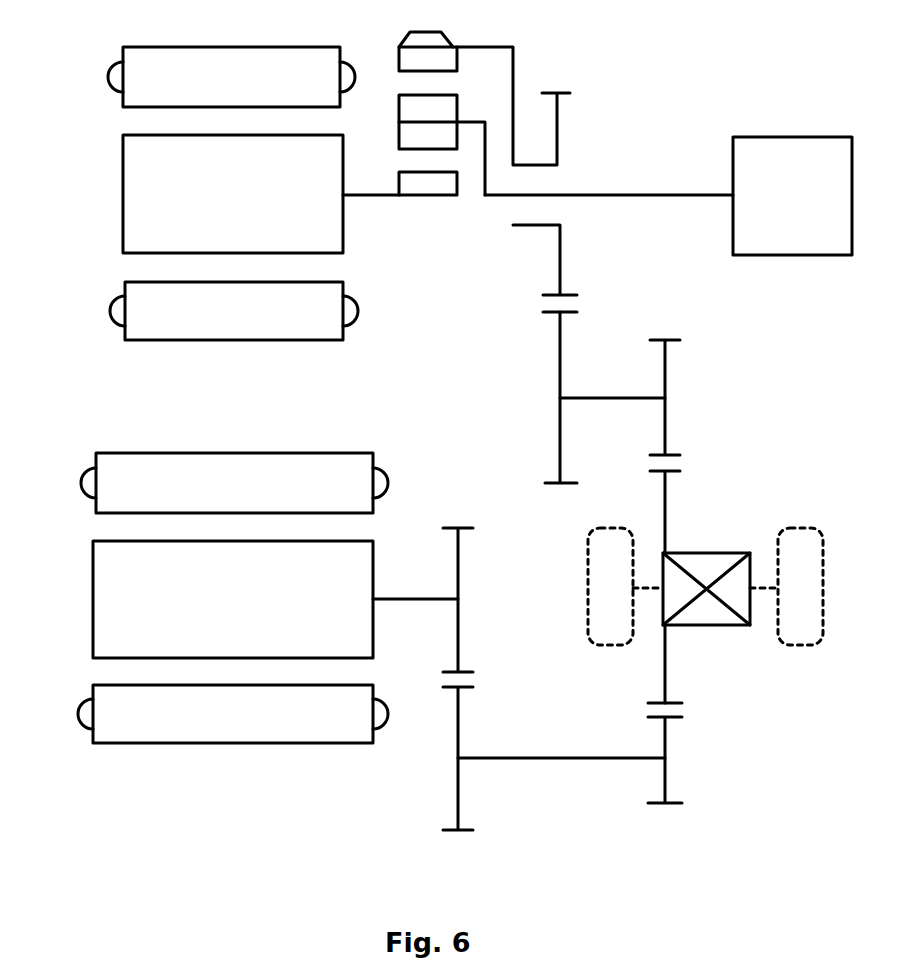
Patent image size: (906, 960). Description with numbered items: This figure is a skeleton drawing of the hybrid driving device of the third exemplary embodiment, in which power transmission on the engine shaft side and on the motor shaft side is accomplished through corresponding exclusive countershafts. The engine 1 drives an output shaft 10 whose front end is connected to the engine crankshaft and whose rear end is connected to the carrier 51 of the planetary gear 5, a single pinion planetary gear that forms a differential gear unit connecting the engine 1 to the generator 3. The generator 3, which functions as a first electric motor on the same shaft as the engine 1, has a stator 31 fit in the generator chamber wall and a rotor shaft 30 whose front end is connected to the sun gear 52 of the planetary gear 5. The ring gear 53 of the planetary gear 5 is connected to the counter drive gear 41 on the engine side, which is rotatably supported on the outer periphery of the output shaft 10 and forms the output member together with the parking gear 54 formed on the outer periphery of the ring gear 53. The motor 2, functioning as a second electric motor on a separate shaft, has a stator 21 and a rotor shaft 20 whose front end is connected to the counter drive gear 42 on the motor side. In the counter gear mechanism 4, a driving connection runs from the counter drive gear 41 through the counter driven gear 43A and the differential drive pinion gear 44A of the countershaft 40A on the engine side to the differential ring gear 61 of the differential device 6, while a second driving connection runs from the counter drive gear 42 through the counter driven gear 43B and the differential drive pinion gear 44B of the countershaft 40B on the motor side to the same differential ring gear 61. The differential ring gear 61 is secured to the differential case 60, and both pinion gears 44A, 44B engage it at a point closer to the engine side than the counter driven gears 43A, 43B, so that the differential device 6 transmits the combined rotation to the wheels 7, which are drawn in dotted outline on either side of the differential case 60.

The engine 1 is at (772, 137).
The output shaft 10 is at (655, 193).
The motor 2 is at (88, 600).
The rotor shaft 20 is at (400, 599).
The stator 21 is at (175, 453).
The generator 3 is at (110, 193).
The rotor shaft 30 is at (363, 197).
The stator 31 is at (283, 340).
The counter gear mechanism 4 is at (566, 527).
The countershaft on the engine side 40A is at (615, 398).
The countershaft on the motor side 40B is at (513, 758).
The counter drive gear on the engine side 41 is at (560, 268).
The counter drive gear on the motor side 42 is at (458, 645).
The counter driven gear 43A is at (560, 452).
The counter driven gear 43B is at (458, 700).
The differential drive pinion gear 44A is at (665, 368).
The differential drive pinion gear 44B is at (665, 733).
The planetary gear 5 is at (456, 154).
The carrier 51 is at (470, 121).
The sun gear 52 is at (433, 197).
The ring gear 53 is at (395, 60).
The parking gear 54 is at (442, 40).
The differential device 6 is at (716, 581).
The differential case 60 is at (715, 627).
The differential ring gear 61 is at (665, 493).
The drive wheels 7 is at (588, 562).